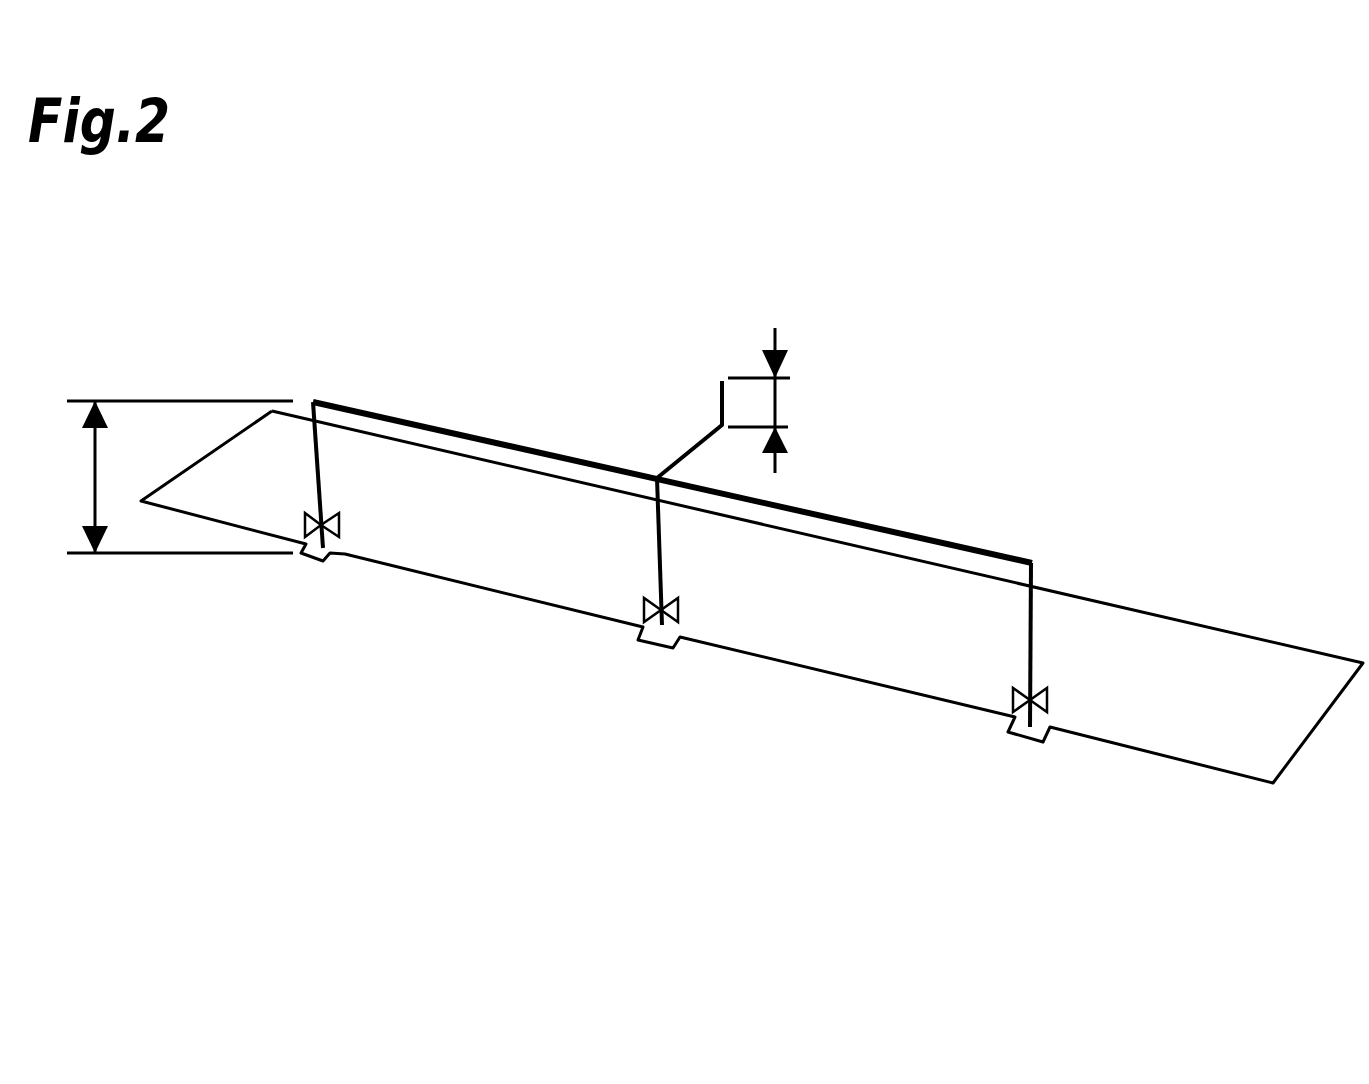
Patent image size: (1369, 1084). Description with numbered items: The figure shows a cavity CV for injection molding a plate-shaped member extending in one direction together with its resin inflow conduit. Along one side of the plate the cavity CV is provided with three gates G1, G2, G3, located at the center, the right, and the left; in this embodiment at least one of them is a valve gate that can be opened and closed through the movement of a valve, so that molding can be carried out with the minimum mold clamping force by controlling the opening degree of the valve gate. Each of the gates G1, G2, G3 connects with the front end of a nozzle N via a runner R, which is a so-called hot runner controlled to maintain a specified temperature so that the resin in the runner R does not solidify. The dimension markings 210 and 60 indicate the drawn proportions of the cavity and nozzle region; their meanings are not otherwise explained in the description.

The cavity CV is at (1120, 622).
The runner R is at (880, 528).
The nozzle N is at (718, 382).
The nozzle height dimension 60 is at (781, 400).
The cavity width dimension 210 is at (154, 477).
The gate G1 is at (1020, 735).
The gate G2 is at (650, 645).
The gate G3 is at (310, 557).